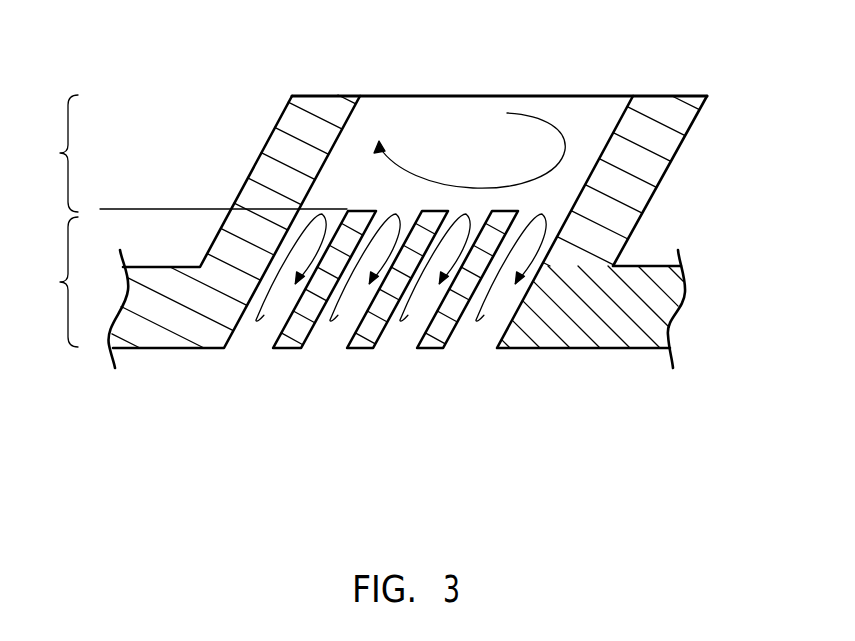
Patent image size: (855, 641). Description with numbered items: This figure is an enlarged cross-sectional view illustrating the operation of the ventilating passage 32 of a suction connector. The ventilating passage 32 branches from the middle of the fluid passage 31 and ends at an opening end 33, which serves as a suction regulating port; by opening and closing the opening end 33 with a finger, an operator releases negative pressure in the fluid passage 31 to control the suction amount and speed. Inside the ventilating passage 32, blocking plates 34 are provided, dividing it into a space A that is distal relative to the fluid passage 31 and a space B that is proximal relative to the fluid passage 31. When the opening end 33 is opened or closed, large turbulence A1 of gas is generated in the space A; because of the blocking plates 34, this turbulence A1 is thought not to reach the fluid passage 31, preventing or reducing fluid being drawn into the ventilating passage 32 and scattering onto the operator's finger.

The fluid passage 31 is at (558, 403).
The ventilating passage 32 is at (665, 157).
The opening end 33 is at (417, 96).
The blocking plates 34 is at (360, 350).
The large turbulence A1 is at (540, 120).
The space A is at (56, 153).
The space B is at (56, 282).